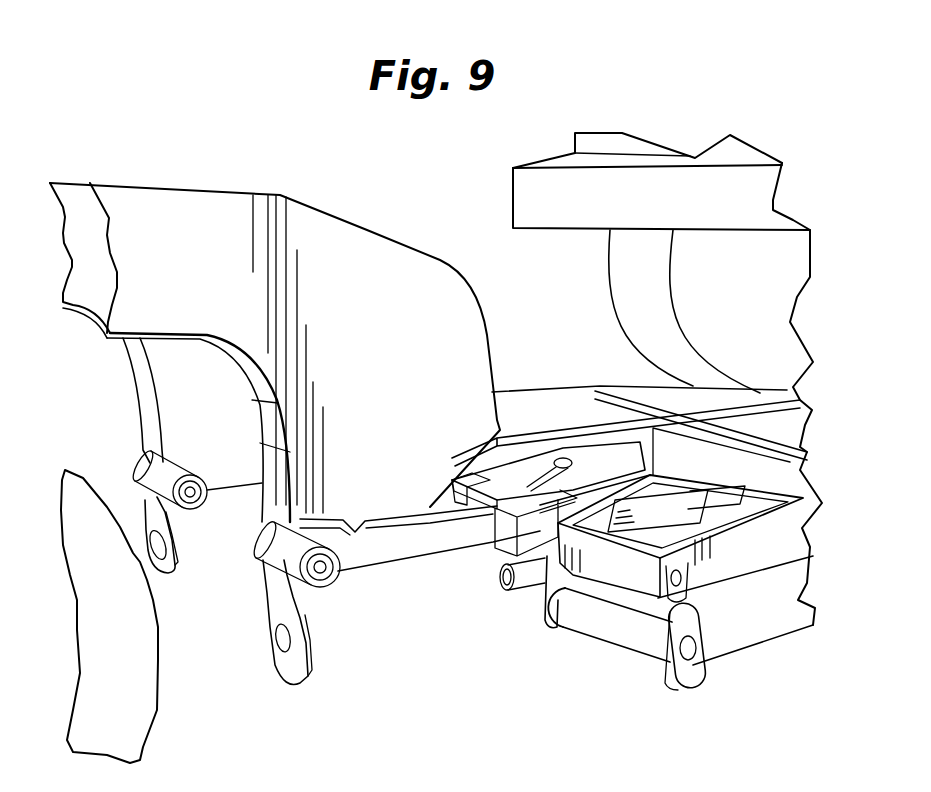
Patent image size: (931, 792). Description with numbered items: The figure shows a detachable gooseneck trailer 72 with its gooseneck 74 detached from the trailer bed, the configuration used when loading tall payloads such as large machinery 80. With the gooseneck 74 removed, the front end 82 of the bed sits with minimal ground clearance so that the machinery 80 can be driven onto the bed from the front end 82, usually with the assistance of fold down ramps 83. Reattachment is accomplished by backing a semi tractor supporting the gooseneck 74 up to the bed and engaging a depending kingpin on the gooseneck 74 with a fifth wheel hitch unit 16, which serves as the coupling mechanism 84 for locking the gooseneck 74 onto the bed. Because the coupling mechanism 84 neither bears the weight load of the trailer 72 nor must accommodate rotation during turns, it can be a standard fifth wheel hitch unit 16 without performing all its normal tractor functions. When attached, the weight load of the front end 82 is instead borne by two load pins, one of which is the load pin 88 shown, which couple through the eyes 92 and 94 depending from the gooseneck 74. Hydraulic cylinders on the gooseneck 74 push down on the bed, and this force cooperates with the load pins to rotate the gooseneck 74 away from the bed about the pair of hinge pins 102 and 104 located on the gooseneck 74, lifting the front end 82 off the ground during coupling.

The gooseneck 74 is at (160, 203).
The machinery 80 is at (543, 190).
The detachable gooseneck trailer 72 is at (580, 395).
The coupling mechanism 84 is at (666, 431).
The fifth wheel hitch unit 16 is at (593, 470).
The hinge pin 104 is at (163, 458).
The eye 94 is at (158, 560).
The eye 92 is at (280, 633).
The hinge pin 102 is at (327, 575).
The load pin 88 is at (535, 575).
The front end 82 is at (553, 620).
The fold down ramps 83 is at (747, 530).